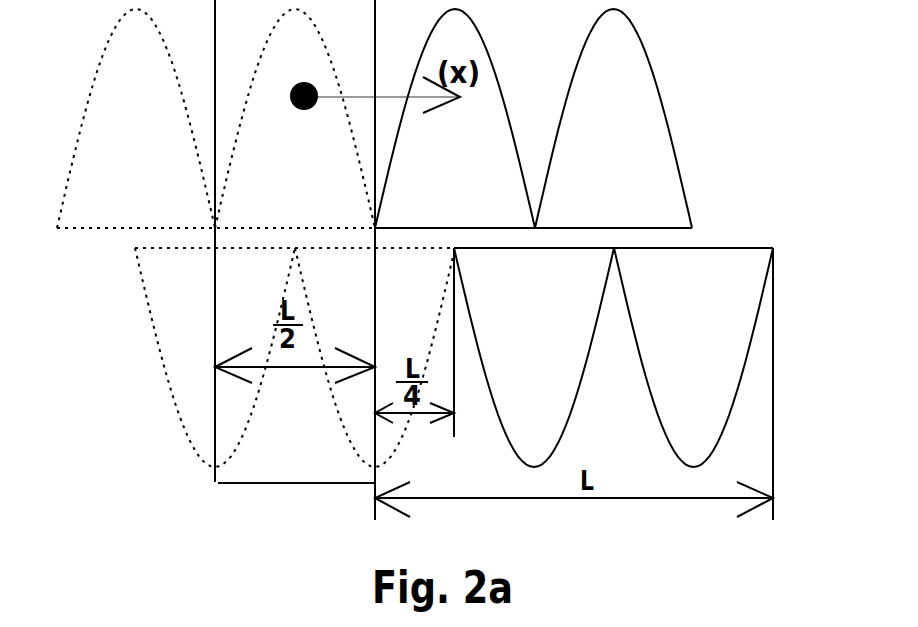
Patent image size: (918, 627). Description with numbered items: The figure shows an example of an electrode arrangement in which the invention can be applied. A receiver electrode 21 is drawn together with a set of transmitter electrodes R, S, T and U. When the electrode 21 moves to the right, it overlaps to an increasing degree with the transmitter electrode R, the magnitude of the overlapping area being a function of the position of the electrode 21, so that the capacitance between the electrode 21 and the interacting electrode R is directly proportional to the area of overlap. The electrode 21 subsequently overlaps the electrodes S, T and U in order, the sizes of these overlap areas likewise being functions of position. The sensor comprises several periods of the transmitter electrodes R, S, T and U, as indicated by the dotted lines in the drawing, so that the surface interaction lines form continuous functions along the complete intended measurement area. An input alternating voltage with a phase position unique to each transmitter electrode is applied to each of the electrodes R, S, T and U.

The electrode 21 is at (242, 219).
The transmitter electrode R is at (455, 118).
The transmitter electrode T is at (613, 118).
The transmitter electrode S is at (534, 357).
The transmitter electrode U is at (693, 357).